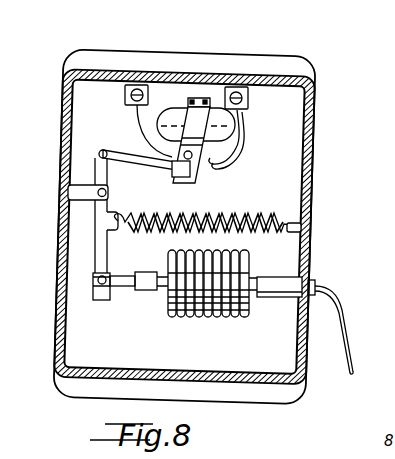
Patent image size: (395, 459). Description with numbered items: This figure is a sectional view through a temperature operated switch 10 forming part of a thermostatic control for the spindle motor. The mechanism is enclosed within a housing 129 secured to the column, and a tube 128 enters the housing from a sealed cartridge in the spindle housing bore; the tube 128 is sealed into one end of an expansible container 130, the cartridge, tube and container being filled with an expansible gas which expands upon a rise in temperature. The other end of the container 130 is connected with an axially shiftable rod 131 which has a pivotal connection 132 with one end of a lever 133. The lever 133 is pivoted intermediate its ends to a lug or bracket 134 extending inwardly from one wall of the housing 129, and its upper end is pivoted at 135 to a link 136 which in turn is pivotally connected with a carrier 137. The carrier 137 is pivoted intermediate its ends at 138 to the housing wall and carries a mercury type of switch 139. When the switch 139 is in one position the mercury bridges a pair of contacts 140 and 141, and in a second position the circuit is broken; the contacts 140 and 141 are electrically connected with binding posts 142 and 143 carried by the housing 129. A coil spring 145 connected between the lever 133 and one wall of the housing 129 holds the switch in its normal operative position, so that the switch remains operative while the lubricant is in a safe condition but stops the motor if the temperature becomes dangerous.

The pressure control switch 10 is at (386, 107).
The tube 128 is at (351, 322).
The housing 129 is at (313, 91).
The expansible container 130 is at (251, 318).
The axially shiftable rod 131 is at (165, 296).
The pivotal connection 132 is at (102, 300).
The lever 133 is at (108, 253).
The lug or bracket 134 is at (83, 200).
The pivot 135 is at (107, 150).
The link 136 is at (137, 168).
The carrier 137 is at (200, 97).
The pivot 138 is at (193, 174).
The mercury type of switch 139 is at (216, 130).
The contact 140 is at (233, 170).
The contact 141 is at (224, 156).
The binding post 142 is at (138, 85).
The binding post 143 is at (239, 97).
The coil spring 145 is at (252, 210).